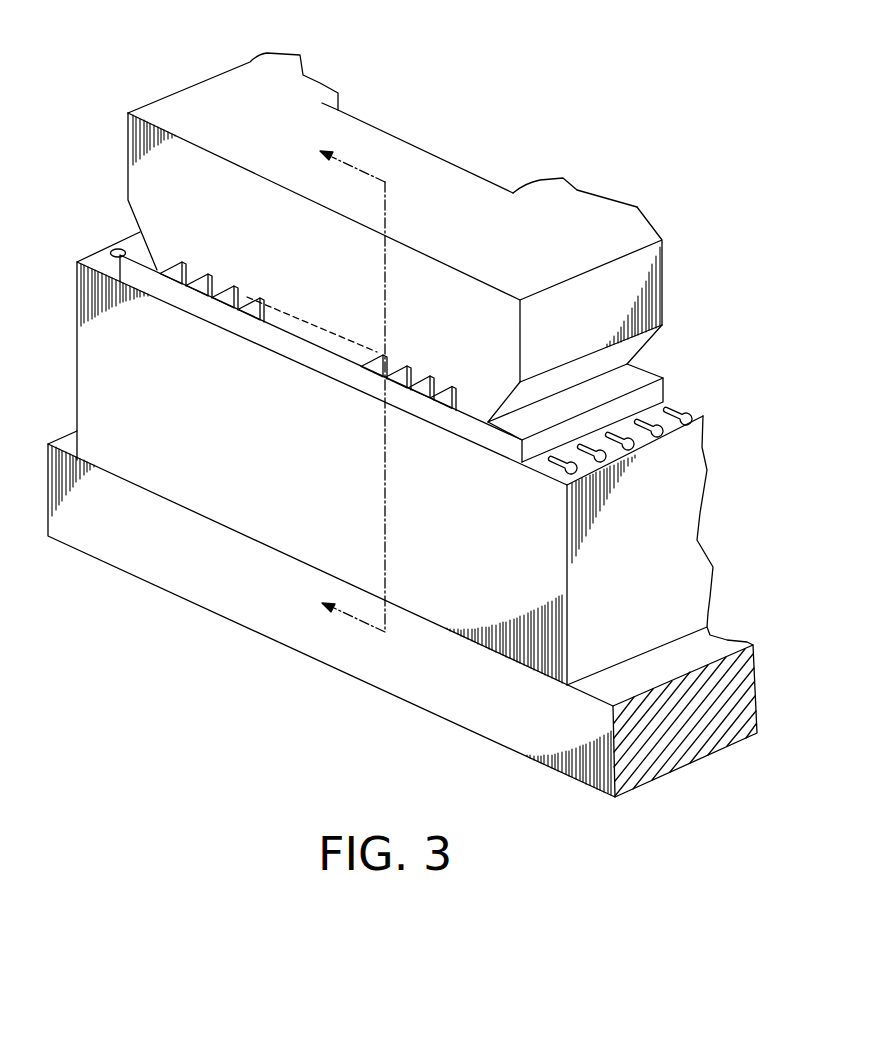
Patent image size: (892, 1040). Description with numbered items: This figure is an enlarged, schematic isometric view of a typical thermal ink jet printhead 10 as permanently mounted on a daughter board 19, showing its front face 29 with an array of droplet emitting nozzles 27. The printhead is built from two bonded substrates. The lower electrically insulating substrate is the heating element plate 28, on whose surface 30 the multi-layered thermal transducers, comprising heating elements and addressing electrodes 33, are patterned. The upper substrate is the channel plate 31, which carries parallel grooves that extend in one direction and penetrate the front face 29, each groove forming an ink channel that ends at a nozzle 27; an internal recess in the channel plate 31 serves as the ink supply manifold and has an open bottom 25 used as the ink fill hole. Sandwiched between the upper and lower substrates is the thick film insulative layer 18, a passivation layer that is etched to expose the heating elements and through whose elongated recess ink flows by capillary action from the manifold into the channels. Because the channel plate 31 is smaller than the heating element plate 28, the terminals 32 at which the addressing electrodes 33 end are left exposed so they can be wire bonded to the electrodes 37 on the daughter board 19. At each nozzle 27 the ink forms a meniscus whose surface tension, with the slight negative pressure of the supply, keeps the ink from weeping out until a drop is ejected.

The printhead 10 is at (197, 54).
The thick film insulative layer 18 is at (637, 377).
The daughter board 19 is at (143, 573).
The open bottom 25 is at (477, 177).
The droplet emitting nozzles 27 is at (203, 293).
The heating element plate 28 is at (702, 567).
The front face 29 is at (128, 153).
The surface 30 is at (702, 422).
The channel plate 31 is at (577, 188).
The terminals 32 is at (657, 440).
The addressing electrodes 33 is at (680, 418).
The electrodes 37 is at (112, 250).